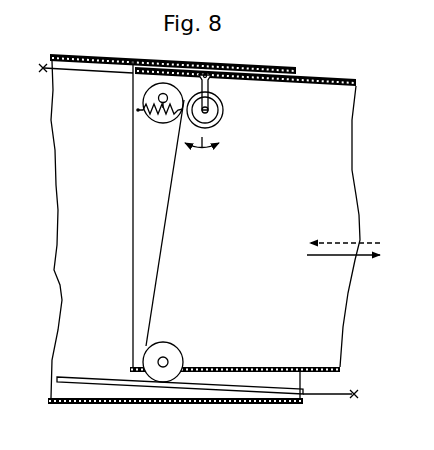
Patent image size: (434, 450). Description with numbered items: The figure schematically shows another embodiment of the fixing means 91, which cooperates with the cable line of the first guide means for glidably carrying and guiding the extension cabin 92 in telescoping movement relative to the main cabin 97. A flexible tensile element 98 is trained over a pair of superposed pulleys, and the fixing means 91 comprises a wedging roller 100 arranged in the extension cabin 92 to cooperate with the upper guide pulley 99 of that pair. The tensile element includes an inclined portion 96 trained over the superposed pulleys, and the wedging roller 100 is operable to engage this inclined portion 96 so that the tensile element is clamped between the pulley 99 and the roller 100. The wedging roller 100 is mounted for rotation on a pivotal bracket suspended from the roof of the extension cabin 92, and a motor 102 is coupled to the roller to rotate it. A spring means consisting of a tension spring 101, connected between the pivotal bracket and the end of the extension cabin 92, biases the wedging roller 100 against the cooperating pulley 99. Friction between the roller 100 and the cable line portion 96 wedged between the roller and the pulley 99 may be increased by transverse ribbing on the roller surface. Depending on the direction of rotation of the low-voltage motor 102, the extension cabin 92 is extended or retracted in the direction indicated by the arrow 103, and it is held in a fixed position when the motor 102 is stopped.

The fixing means 91 is at (256, 113).
The extension cabin 92 is at (343, 300).
The tensile element portion 96 is at (160, 233).
The main cabin 97 is at (101, 387).
The flexible tensile element 98 is at (69, 74).
The upper guide pulley 99 is at (148, 100).
The wedging roller 100 is at (222, 124).
The tension spring 101 is at (141, 118).
The motor 102 is at (216, 104).
The arrow 103 is at (342, 243).